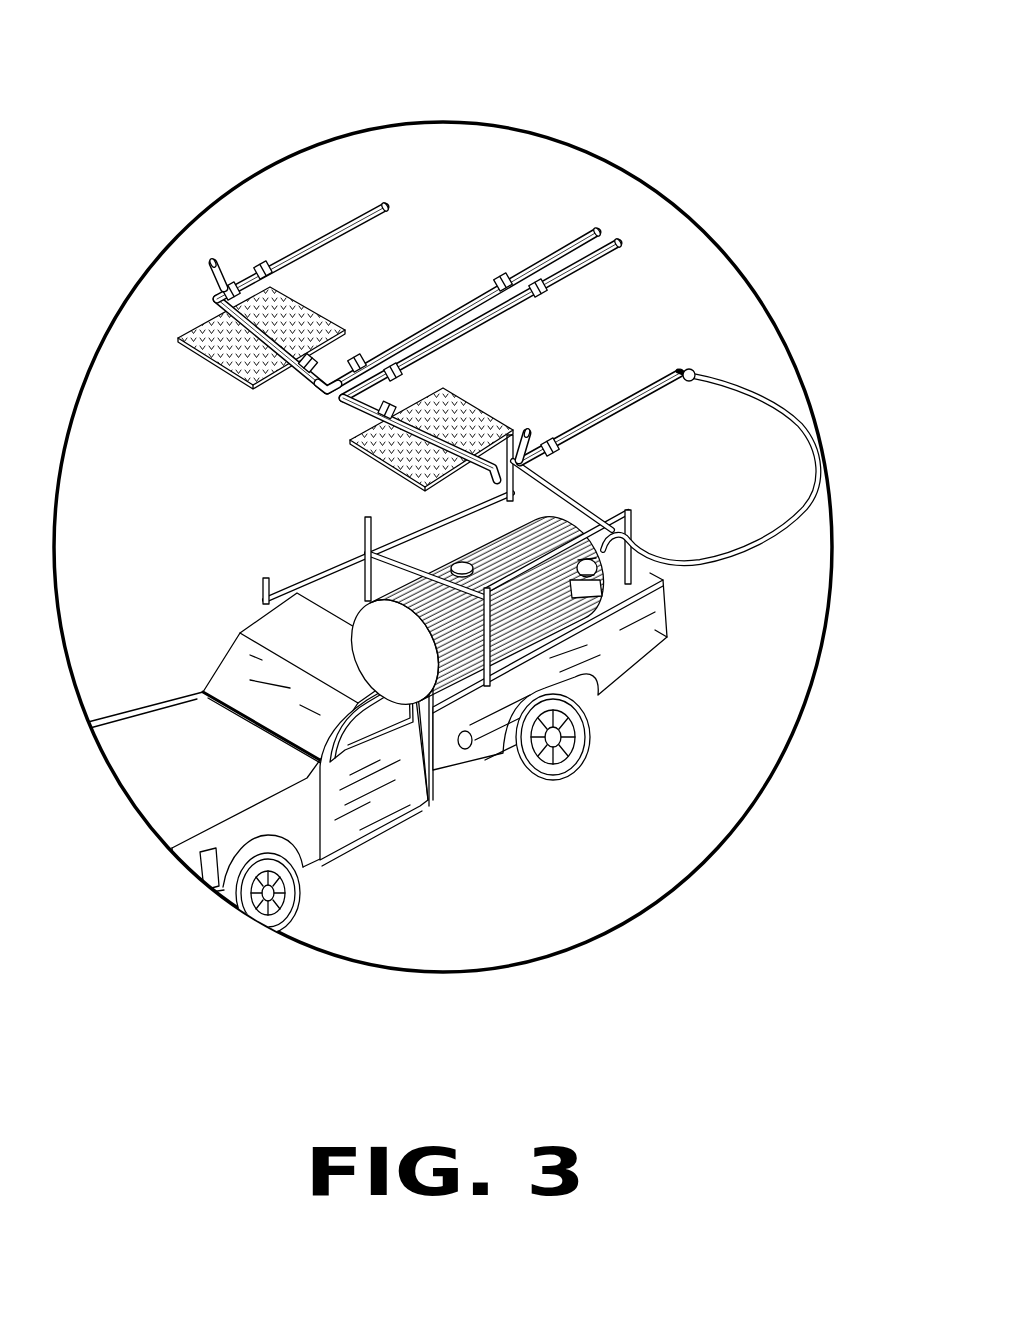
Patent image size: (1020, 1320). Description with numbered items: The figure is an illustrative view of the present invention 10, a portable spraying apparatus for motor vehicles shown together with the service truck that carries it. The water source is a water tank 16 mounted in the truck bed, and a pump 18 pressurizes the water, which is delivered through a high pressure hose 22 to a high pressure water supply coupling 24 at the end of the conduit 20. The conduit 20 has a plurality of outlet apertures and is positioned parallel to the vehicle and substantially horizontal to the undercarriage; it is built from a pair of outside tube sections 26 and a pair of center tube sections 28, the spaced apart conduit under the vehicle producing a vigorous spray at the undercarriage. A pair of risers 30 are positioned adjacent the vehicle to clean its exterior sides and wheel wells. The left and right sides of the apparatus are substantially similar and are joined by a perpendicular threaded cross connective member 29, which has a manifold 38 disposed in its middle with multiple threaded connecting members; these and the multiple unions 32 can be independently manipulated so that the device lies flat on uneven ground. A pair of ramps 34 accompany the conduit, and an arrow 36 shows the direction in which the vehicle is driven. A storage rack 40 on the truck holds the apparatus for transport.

The present invention 10 is at (654, 146).
The water tank 16 is at (500, 491).
The pump 18 is at (557, 503).
The conduit 20 is at (518, 97).
The high pressure hose 22 is at (750, 553).
The high pressure water supply coupling 24 is at (692, 371).
The outside tube sections 26 is at (290, 248).
The center tube sections 28 is at (600, 222).
The cross connective member 29 is at (330, 402).
The risers 30 is at (208, 262).
The unions 32 is at (548, 446).
The ramps 34 is at (305, 292).
The arrow 36 is at (400, 266).
The manifold 38 is at (346, 415).
The storage rack 40 is at (283, 566).